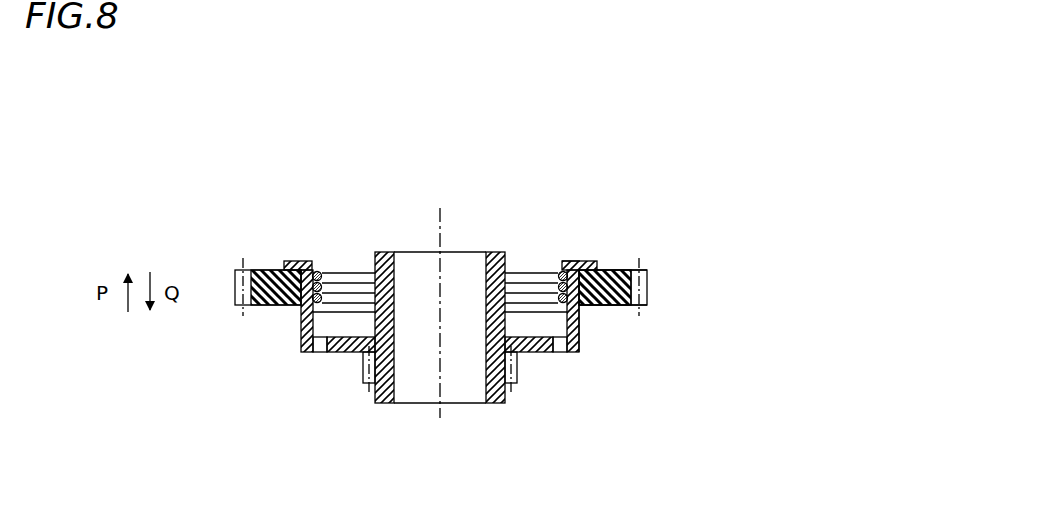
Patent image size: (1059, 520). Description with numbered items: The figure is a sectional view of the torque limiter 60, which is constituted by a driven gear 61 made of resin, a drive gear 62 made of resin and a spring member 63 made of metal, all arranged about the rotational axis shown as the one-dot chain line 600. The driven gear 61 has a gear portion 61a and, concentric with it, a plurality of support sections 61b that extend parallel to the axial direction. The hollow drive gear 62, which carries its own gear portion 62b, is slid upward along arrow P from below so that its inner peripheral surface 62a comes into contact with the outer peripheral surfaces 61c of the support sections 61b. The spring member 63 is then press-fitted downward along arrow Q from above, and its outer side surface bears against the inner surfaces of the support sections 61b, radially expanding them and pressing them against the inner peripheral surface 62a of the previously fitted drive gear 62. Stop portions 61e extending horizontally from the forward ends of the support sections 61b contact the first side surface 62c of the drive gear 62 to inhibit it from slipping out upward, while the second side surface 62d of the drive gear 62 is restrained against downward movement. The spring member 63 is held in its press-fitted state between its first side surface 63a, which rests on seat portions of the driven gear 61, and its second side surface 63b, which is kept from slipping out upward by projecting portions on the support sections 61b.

The torque limiter 60 is at (190, 120).
The one-dot chain line 600 is at (440, 237).
The driven gear 61 is at (468, 252).
The gear portion 61a is at (517, 368).
The support sections 61b is at (580, 333).
The outer peripheral surfaces 61c is at (580, 316).
The stop portions 61e is at (292, 261).
The drive gear 62 is at (265, 270).
The inner peripheral surface 62a is at (575, 261).
The gear portion 62b is at (647, 290).
The first side surface 62c is at (625, 270).
The second side surface 62d is at (612, 306).
The spring member 63 is at (367, 283).
The first side surface 63a is at (320, 352).
The second side surface 63b is at (318, 271).